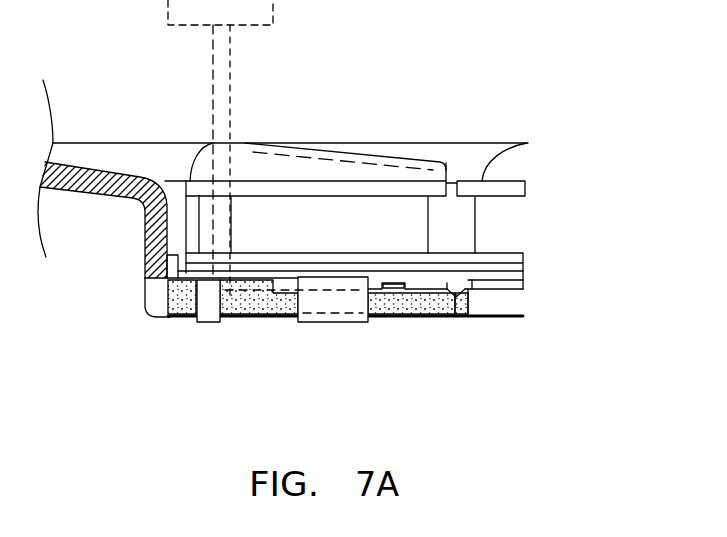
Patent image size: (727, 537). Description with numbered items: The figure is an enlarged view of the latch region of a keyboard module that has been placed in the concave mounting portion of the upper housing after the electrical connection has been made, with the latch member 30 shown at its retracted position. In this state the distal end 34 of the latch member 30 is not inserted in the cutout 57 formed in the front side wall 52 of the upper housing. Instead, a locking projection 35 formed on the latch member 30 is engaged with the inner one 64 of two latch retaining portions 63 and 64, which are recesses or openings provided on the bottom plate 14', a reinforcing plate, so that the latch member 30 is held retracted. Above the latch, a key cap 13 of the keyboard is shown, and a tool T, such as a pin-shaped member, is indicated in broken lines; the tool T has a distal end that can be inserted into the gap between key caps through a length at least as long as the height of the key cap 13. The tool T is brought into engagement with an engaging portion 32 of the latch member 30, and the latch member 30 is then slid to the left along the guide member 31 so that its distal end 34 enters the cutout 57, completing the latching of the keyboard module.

The tool T is at (165, 4).
The key cap 13 is at (238, 158).
The front side wall of the upper housing 52 is at (140, 221).
The engaging portion 32 is at (230, 297).
The latch retaining portion 63 is at (396, 282).
The inner latch retaining portion 64 is at (460, 290).
The bottom plate 14' is at (371, 281).
The latch member 30 is at (435, 317).
The locking projection 35 is at (455, 317).
The guide member 31 is at (318, 308).
The distal end of the latch member 34 is at (185, 315).
The cutout 57 is at (156, 299).